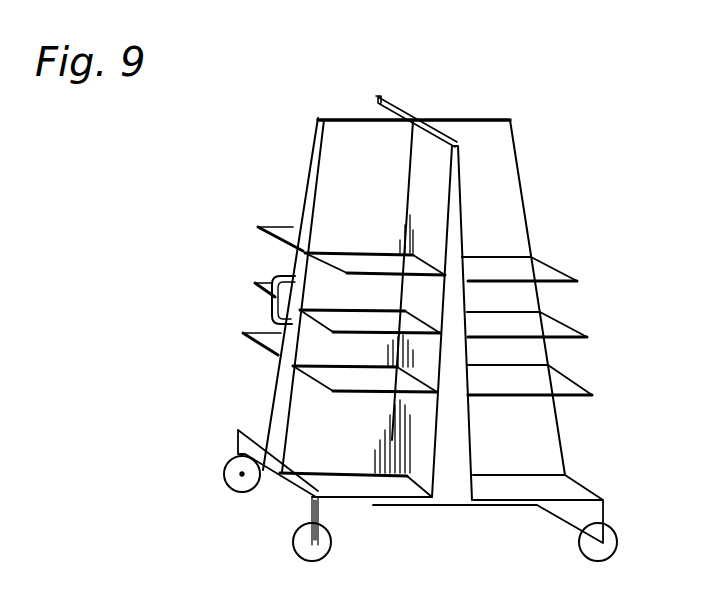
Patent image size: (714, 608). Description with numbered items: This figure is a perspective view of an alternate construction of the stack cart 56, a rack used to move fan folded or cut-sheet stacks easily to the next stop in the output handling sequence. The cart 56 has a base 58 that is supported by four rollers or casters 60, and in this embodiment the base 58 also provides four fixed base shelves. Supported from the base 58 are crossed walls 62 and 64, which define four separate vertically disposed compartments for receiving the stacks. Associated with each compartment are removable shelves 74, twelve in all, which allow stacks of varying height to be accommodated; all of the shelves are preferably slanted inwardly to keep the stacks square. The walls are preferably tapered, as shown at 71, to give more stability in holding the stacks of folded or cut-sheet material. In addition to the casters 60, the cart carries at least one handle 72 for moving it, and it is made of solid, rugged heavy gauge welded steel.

The stack cart 56 is at (620, 503).
The base 58 is at (308, 490).
The casters 60 is at (223, 478).
The wall 62 is at (332, 158).
The wall 64 is at (460, 185).
The tapered wall portion 71 is at (448, 447).
The handle 72 is at (272, 313).
The removable shelves 74 is at (278, 230).